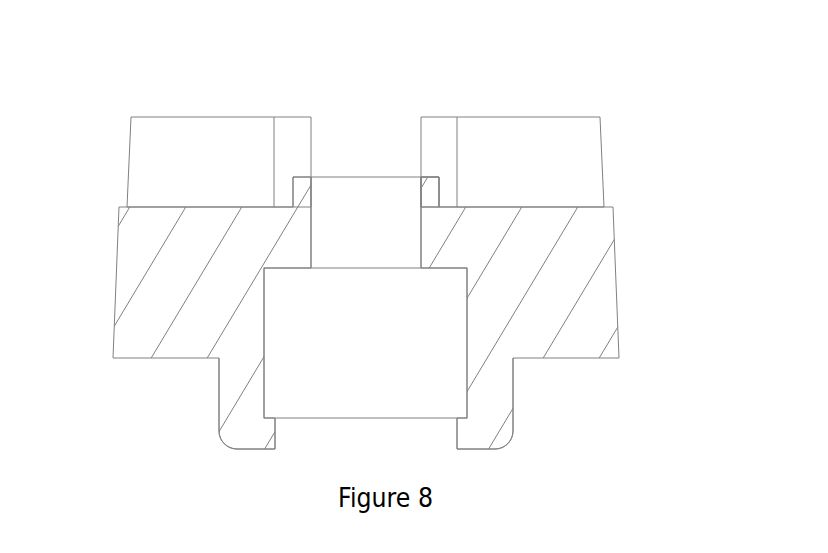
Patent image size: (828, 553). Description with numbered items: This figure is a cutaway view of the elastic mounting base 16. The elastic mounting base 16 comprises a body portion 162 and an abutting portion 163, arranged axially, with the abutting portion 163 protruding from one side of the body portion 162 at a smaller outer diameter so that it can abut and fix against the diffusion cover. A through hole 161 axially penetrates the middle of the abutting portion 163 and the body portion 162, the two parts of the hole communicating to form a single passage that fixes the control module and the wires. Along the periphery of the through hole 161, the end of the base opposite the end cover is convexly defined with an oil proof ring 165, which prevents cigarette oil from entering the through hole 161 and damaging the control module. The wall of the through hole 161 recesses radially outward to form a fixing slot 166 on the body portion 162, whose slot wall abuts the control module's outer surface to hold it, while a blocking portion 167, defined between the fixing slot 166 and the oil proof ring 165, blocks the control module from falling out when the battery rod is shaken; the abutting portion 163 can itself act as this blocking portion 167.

The elastic mounting base 16 is at (370, 36).
The through hole 161 is at (353, 217).
The body portion 162 is at (210, 261).
The abutting portion 163 is at (232, 410).
The oil proof ring 165 is at (428, 188).
The fixing slot 166 is at (512, 366).
The blocking portion 167 is at (428, 236).